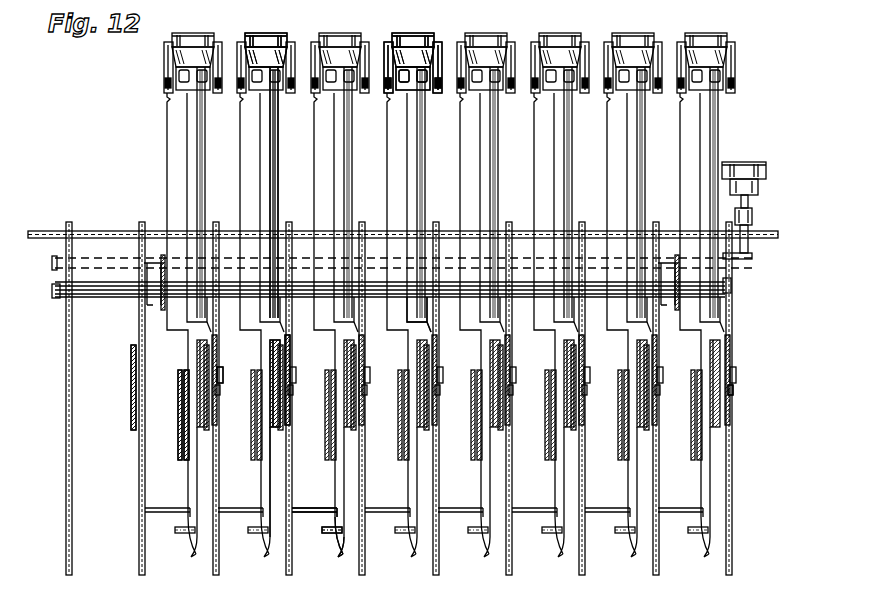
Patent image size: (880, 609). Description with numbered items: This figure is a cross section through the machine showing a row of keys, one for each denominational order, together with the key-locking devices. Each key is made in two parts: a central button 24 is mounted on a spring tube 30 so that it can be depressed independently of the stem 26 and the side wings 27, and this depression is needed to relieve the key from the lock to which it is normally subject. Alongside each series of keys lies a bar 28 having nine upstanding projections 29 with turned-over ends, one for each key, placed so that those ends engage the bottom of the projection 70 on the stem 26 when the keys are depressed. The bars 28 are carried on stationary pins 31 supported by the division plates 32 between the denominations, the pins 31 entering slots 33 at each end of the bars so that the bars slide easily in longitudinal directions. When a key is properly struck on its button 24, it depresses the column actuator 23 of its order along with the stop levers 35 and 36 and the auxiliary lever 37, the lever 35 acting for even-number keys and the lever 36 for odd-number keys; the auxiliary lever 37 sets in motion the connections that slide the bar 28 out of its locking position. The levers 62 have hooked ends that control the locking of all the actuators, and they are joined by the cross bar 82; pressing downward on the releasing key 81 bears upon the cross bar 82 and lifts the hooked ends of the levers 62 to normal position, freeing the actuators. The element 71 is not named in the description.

The column actuator 23 is at (130, 410).
The central button 24 is at (427, 36).
The stem 26 is at (290, 503).
The side wings 27 is at (288, 42).
The bar 28 is at (292, 350).
The upstanding projections 29 is at (430, 342).
The spring tube 30 is at (280, 175).
The pins 31 is at (223, 390).
The division plates 32 is at (71, 501).
The slots 33 is at (734, 389).
The stop lever 35 is at (178, 448).
The stop lever 36 is at (186, 468).
The auxiliary lever 37 is at (273, 357).
The levers 62 is at (164, 306).
The projection 70 is at (340, 300).
The end fitting 71 is at (56, 294).
The releasing key 81 is at (752, 161).
The cross bar 82 is at (107, 263).